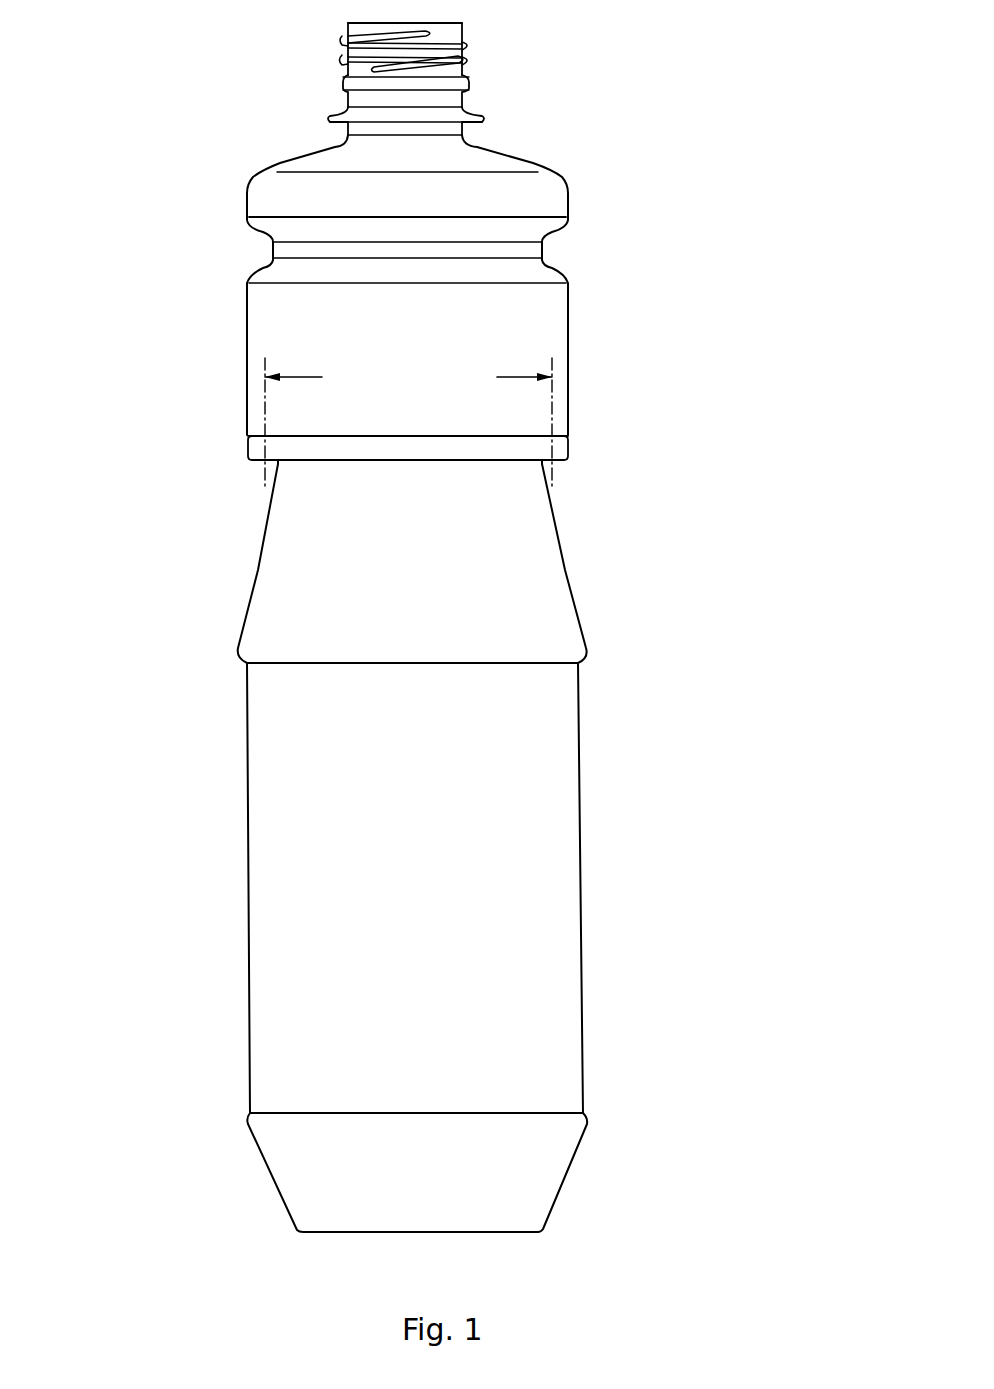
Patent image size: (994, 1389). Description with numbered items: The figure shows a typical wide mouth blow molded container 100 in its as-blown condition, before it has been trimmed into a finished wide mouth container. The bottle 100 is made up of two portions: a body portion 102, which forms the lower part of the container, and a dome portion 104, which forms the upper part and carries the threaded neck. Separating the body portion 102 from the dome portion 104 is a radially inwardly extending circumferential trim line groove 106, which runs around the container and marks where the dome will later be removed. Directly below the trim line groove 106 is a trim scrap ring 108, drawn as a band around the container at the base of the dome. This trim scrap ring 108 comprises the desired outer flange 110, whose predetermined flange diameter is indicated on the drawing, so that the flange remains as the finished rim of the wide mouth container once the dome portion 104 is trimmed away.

The wide mouth blow molded container 100 is at (432, 627).
The body portion 102 is at (583, 842).
The dome portion 104 is at (203, 23).
The trim line groove 106 is at (252, 437).
The trim scrap ring 108 is at (587, 432).
The outer flange 110 is at (258, 468).